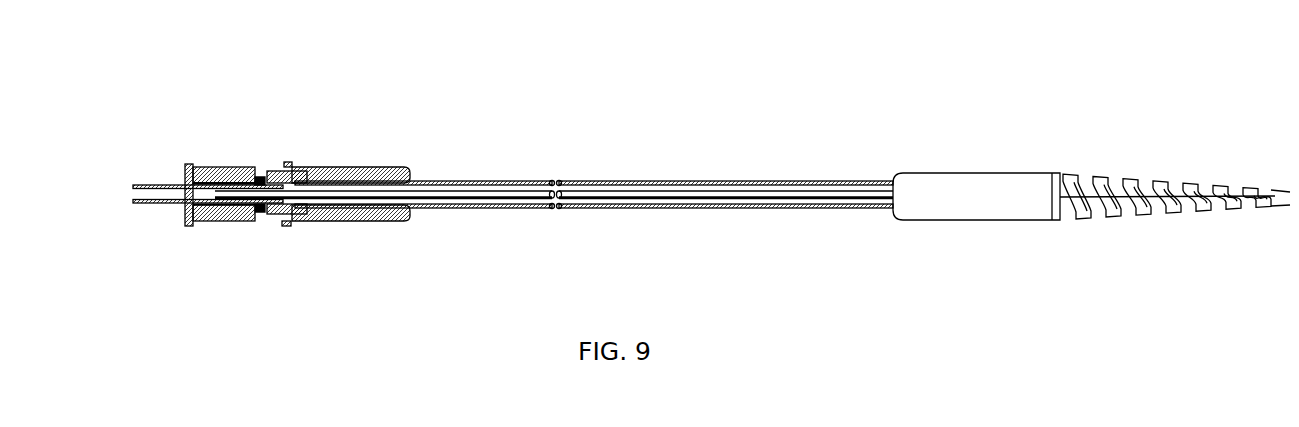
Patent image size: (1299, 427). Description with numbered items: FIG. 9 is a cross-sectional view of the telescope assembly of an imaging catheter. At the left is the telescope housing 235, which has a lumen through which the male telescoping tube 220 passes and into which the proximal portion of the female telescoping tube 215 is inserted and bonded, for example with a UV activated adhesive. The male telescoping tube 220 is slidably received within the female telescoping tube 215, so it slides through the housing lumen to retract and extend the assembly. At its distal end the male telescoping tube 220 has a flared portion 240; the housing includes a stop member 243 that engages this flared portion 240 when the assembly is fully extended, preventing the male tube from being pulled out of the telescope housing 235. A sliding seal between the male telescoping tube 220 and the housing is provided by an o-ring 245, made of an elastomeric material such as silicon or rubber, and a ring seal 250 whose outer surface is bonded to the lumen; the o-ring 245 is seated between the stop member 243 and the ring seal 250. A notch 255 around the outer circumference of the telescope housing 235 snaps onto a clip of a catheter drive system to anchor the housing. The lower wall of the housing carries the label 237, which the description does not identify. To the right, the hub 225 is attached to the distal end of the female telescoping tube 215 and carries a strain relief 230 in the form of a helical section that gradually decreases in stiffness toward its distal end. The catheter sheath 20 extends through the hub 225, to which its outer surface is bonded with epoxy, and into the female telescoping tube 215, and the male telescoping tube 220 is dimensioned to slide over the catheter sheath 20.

The catheter sheath 20 is at (613, 191).
The female telescoping tube 215 is at (670, 181).
The male telescoping tube 220 is at (184, 186).
The hub 225 is at (1017, 173).
The strain relief 230 is at (1213, 185).
The telescope housing 235 is at (360, 167).
The lower sleeve 237 is at (410, 215).
The flared portion 240 is at (296, 222).
The stop member 243 is at (268, 212).
The o-ring 245 is at (258, 171).
The ring seal 250 is at (208, 167).
The notch 255 is at (287, 162).